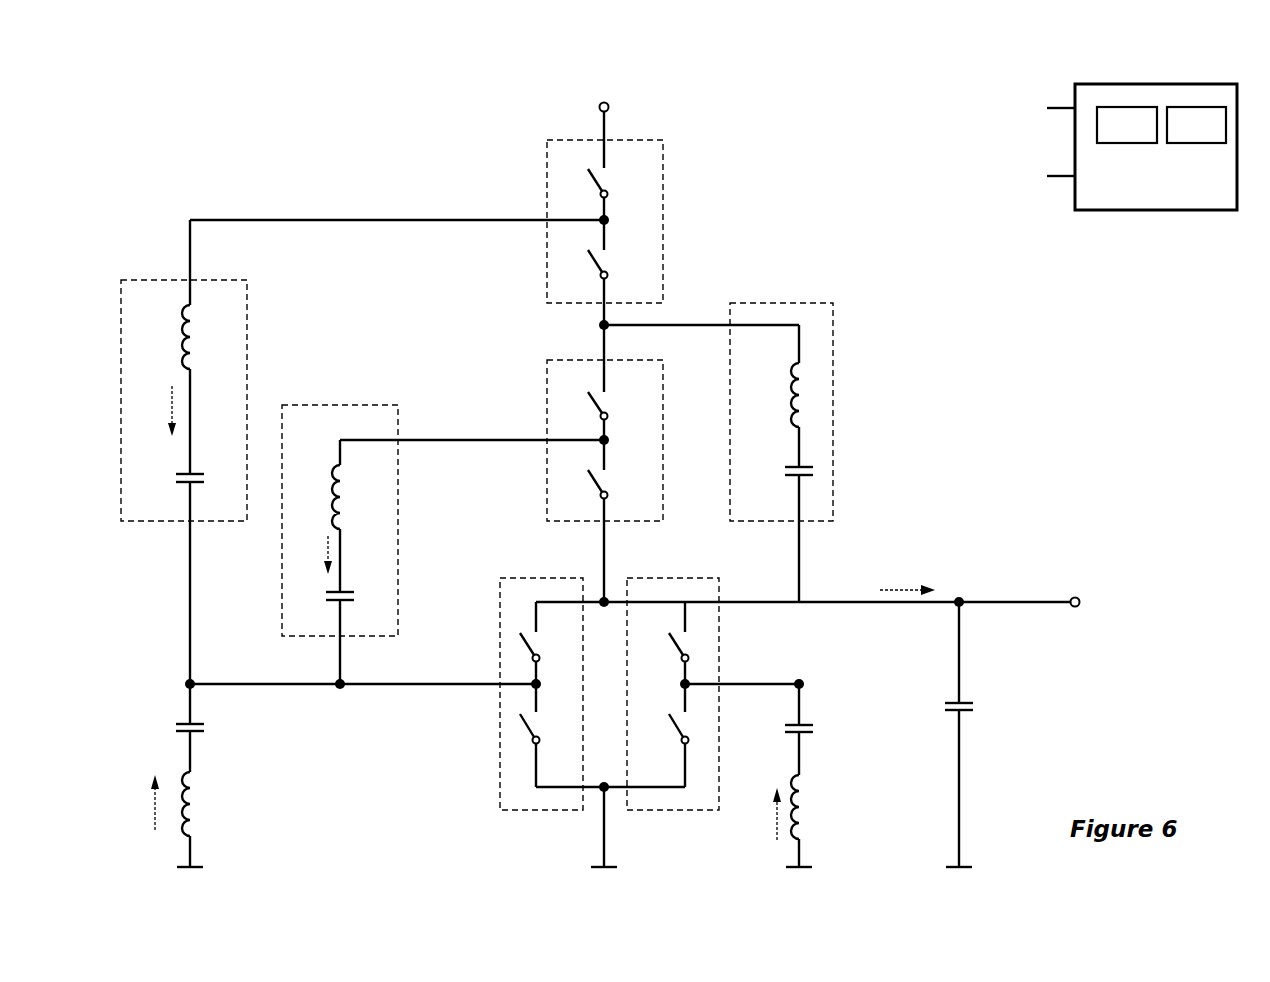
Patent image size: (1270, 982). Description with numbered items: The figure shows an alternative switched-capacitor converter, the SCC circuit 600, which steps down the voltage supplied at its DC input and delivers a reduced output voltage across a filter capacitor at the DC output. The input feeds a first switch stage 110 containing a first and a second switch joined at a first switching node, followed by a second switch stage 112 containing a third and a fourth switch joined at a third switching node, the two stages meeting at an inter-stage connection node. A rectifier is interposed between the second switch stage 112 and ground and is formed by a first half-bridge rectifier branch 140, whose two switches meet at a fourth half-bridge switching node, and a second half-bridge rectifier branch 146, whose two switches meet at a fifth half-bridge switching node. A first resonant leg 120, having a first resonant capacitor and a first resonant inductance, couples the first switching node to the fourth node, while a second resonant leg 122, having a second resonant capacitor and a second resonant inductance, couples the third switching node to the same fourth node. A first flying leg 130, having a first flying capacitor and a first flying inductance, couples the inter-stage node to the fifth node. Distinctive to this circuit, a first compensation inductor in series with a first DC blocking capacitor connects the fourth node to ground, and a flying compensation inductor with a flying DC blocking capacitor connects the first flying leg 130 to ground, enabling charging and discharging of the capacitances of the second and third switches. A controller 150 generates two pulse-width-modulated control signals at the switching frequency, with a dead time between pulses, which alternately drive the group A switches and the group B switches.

The SCC circuit 600 is at (228, 105).
The first switch stage 110 is at (605, 222).
The second switch stage 112 is at (605, 463).
The first resonant leg 120 is at (184, 452).
The second resonant leg 122 is at (340, 534).
The first flying leg 130 is at (781, 442).
The first half-bridge rectifier branch 140 is at (541, 684).
The second half-bridge rectifier branch 146 is at (673, 684).
The controller 150 is at (1108, 137).